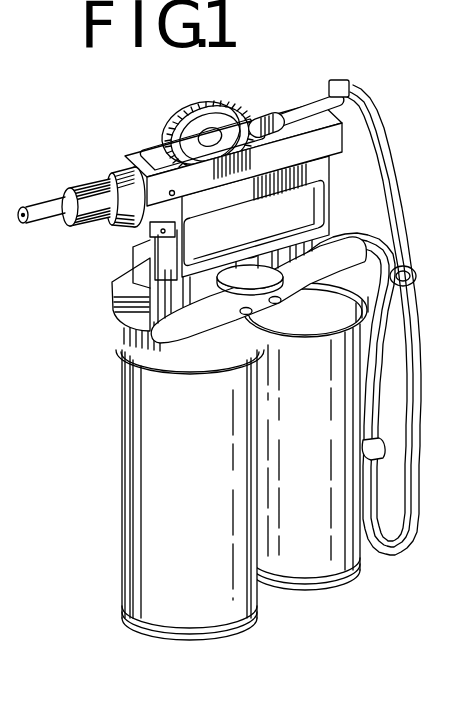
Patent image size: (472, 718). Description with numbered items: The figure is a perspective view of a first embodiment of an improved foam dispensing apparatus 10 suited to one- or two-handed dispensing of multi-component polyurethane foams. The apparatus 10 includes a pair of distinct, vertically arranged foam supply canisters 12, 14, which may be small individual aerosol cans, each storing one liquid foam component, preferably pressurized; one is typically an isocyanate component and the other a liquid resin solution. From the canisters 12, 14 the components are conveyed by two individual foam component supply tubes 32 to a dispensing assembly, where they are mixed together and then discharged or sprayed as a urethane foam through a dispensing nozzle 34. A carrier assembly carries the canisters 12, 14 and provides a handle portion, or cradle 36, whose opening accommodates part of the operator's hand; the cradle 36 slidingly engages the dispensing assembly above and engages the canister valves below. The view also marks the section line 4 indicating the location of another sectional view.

The foam dispensing apparatus 10 is at (96, 360).
The foam supply canister 12 is at (190, 571).
The foam supply canister 14 is at (314, 532).
The foam component supply tube 32 is at (420, 337).
The dispensing nozzle 34 is at (85, 193).
The handle portion (cradle) 36 is at (322, 213).
The section line 4- 4 is at (57, 147).